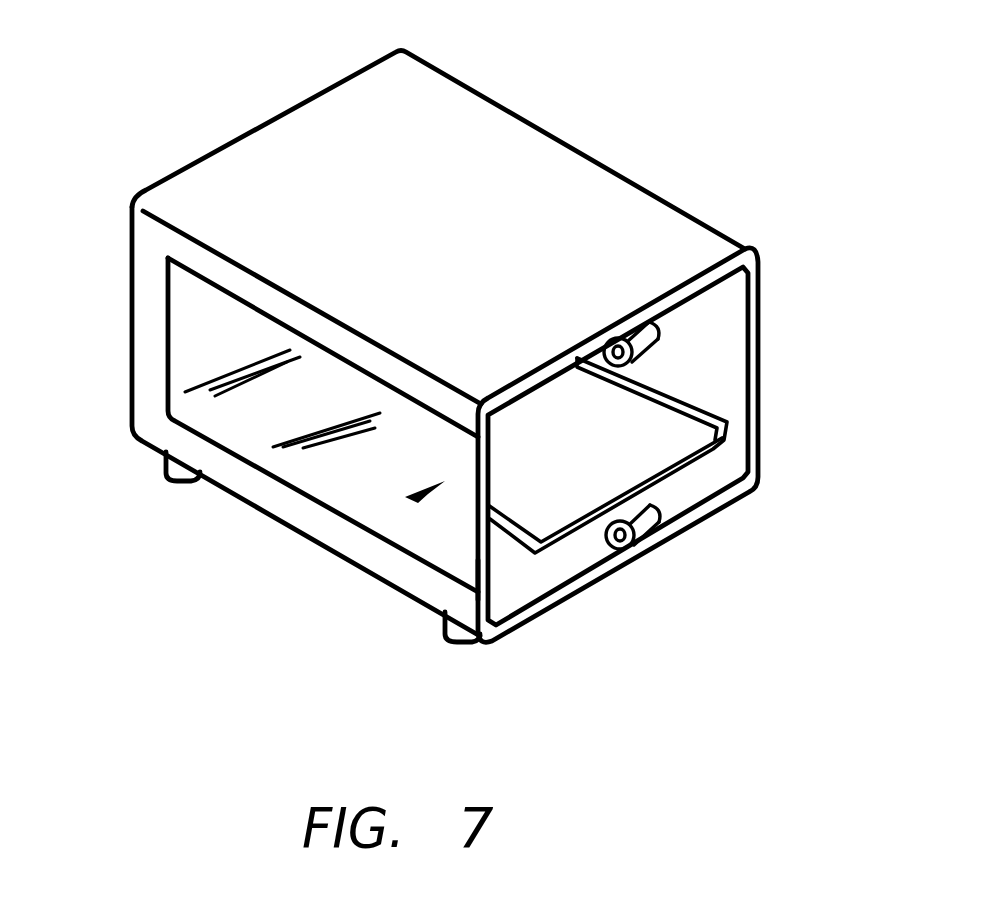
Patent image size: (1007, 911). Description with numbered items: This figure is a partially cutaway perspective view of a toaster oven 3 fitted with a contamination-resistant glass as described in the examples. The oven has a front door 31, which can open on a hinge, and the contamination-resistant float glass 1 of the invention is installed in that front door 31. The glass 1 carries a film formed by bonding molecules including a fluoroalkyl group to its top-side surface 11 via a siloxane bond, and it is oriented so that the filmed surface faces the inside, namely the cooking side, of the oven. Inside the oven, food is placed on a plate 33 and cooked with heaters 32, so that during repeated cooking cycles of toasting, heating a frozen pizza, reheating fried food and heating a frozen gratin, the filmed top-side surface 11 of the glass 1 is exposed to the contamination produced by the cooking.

The housing 3 is at (619, 133).
The front door 31 is at (143, 274).
The heaters 32 is at (654, 332).
The plate 33 is at (673, 455).
The contamination-resistant float glass 1 is at (310, 477).
The top-side surface 11 is at (493, 570).